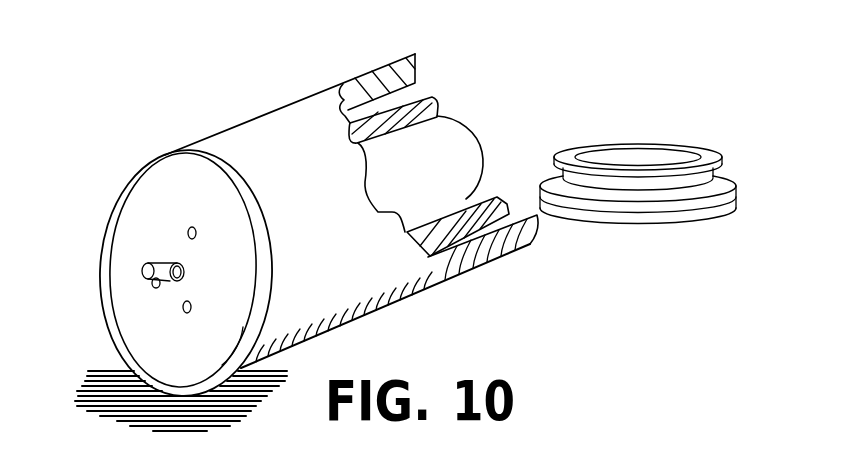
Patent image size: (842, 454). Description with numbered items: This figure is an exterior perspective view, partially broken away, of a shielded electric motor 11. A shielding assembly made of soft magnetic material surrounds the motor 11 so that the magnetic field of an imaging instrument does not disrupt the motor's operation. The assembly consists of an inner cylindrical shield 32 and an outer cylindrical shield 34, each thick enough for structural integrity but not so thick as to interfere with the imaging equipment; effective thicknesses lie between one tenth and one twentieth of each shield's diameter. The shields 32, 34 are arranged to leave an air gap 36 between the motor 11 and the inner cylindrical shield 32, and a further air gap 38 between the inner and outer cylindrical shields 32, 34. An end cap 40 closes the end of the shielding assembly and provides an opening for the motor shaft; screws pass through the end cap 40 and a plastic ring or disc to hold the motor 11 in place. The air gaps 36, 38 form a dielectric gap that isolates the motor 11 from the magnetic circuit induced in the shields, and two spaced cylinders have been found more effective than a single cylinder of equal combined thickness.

The electric motor 11 is at (460, 153).
The inner cylindrical shield 32 is at (437, 117).
The outer cylindrical shield 34 is at (353, 85).
The air gap 36 is at (416, 103).
The air gap 38 is at (414, 89).
The end cap 40 is at (148, 210).